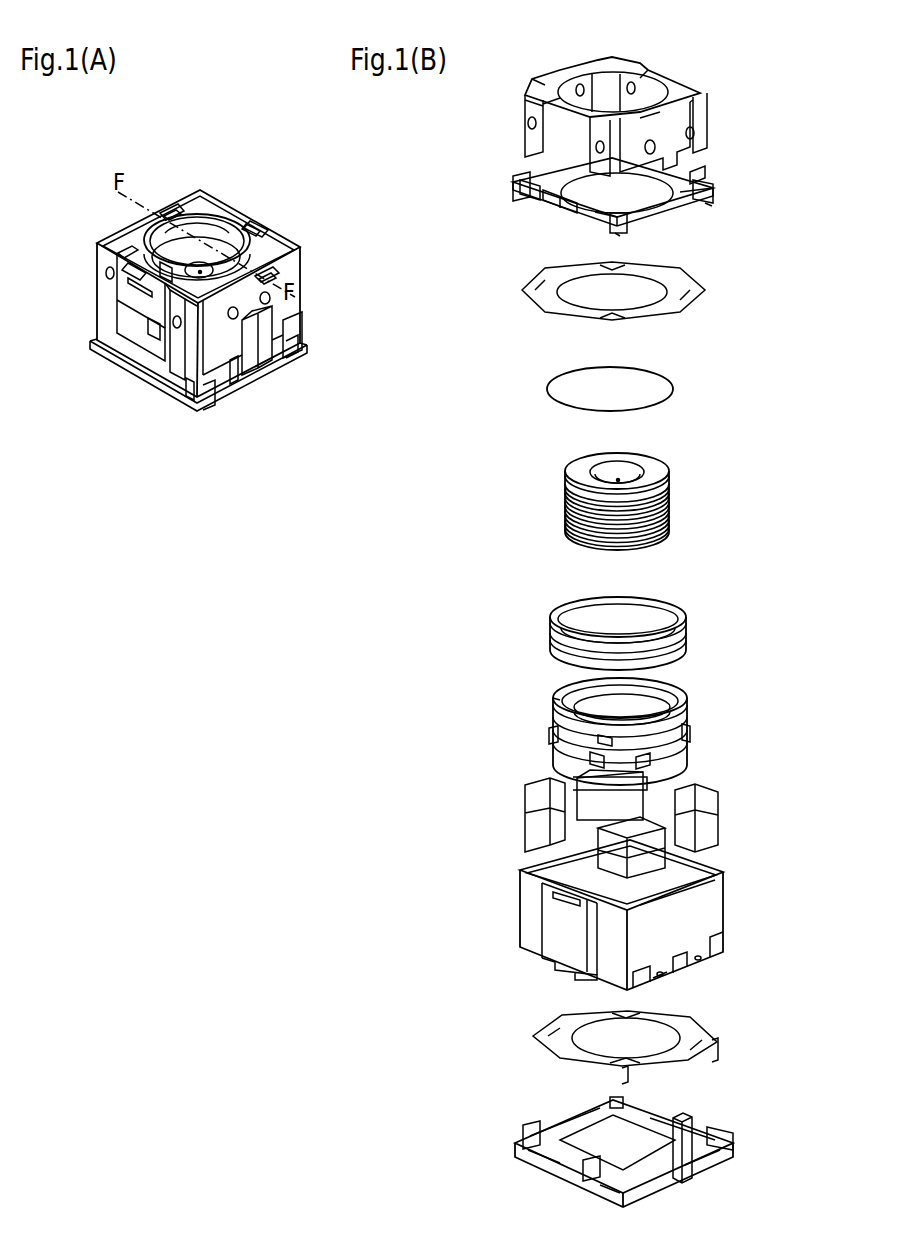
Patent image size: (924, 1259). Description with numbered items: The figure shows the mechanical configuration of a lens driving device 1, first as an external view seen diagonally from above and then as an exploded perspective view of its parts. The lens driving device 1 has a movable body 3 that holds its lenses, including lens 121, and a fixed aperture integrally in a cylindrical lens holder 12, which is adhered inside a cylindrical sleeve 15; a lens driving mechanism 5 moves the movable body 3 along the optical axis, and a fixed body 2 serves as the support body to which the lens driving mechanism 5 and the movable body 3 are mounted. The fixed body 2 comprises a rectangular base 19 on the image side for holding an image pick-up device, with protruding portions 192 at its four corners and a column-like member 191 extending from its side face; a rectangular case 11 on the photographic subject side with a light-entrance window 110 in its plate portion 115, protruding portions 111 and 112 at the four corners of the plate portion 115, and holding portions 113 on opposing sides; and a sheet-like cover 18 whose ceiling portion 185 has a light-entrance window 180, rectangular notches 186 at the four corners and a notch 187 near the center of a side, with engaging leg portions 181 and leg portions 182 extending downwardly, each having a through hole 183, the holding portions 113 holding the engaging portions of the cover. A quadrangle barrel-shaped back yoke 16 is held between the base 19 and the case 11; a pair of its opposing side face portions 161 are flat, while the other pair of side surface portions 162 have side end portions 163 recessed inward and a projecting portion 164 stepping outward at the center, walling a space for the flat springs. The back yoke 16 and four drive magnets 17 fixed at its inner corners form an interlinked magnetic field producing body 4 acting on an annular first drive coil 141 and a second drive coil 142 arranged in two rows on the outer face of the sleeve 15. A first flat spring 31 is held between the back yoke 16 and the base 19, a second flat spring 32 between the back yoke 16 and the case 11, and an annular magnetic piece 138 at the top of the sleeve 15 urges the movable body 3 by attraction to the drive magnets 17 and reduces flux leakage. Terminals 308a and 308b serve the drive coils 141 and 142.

In FIG. 1A, the lens driving device 1 is at (285, 150).
In FIG. 1A, the fixed body 2 is at (35, 207).
In FIG. 1A, the movable body 3 is at (237, 238).
In FIG. 1B, the movable body 3 is at (768, 510).
In FIG. 1B, the interlinked magnetic field producing body 4 is at (775, 960).
In FIG. 1B, the lens driving mechanism 5 is at (548, 700).
In FIG. 1A, the case 11 is at (93, 256).
In FIG. 1B, the case 11 is at (700, 181).
In FIG. 1A, the lens holder 12 is at (195, 262).
In FIG. 1B, the lens holder 12 is at (670, 505).
In FIG. 1B, the sleeve 15 is at (700, 732).
In FIG. 1A, the back yoke 16 is at (100, 300).
In FIG. 1B, the back yoke 16 is at (708, 893).
In FIG. 1B, the drive magnet 17 is at (652, 782).
In FIG. 1A, the sheet-like cover 18 is at (100, 240).
In FIG. 1B, the sheet-like cover 18 is at (700, 84).
In FIG. 1A, the base 19 is at (95, 338).
In FIG. 1B, the base 19 is at (682, 1112).
In FIG. 1B, the first flat spring 31 is at (730, 1034).
In FIG. 1B, the second flat spring 32 is at (700, 291).
In FIG. 1A, the light-entrance window 110 is at (206, 222).
In FIG. 1B, the light-entrance window 110 is at (713, 222).
In FIG. 1A, the protruding portion 111 is at (185, 206).
In FIG. 1B, the protruding portion 111 is at (712, 193).
In FIG. 1B, the protruding portion 112 is at (714, 208).
In FIG. 1A, the holding portion 113 is at (258, 230).
In FIG. 1B, the holding portion 113 is at (548, 208).
In FIG. 1B, the plate portion 115 is at (612, 222).
In FIG. 1B, the lens 121 is at (644, 476).
In FIG. 1B, the magnetic piece 138 is at (676, 376).
In FIG. 1B, the first drive coil 141 is at (686, 664).
In FIG. 1B, the second drive coil 142 is at (686, 628).
In FIG. 1A, the side face portion 161 is at (290, 312).
In FIG. 1B, the side face portion 161 is at (720, 935).
In FIG. 1A, the side surface portion 162 is at (197, 400).
In FIG. 1B, the side surface portion 162 is at (445, 897).
In FIG. 1A, the side end portion 163 is at (128, 332).
In FIG. 1B, the side end portion 163 is at (600, 935).
In FIG. 1A, the projecting portion 164 is at (136, 346).
In FIG. 1B, the projecting portion 164 is at (556, 948).
In FIG. 1B, the light-entrance window 180 is at (665, 92).
In FIG. 1A, the engaging leg portion 181 is at (250, 345).
In FIG. 1B, the engaging leg portion 181 is at (700, 117).
In FIG. 1A, the leg portion 182 is at (125, 303).
In FIG. 1B, the leg portion 182 is at (527, 103).
In FIG. 1A, the through hole 183 is at (192, 402).
In FIG. 1B, the through hole 183 is at (528, 124).
In FIG. 1B, the ceiling portion 185 is at (548, 80).
In FIG. 1A, the notch 186 is at (305, 247).
In FIG. 1B, the notch 186 is at (515, 86).
In FIG. 1B, the notch 187 is at (647, 62).
In FIG. 1A, the column-like member 191 is at (270, 360).
In FIG. 1B, the column-like member 191 is at (695, 1172).
In FIG. 1B, the protruding portion 192 is at (614, 1098).
In FIG. 1A, the terminal 308a is at (300, 356).
In FIG. 1B, the terminal 308a is at (722, 1052).
In FIG. 1A, the terminal 308b is at (214, 410).
In FIG. 1B, the terminal 308b is at (634, 1076).